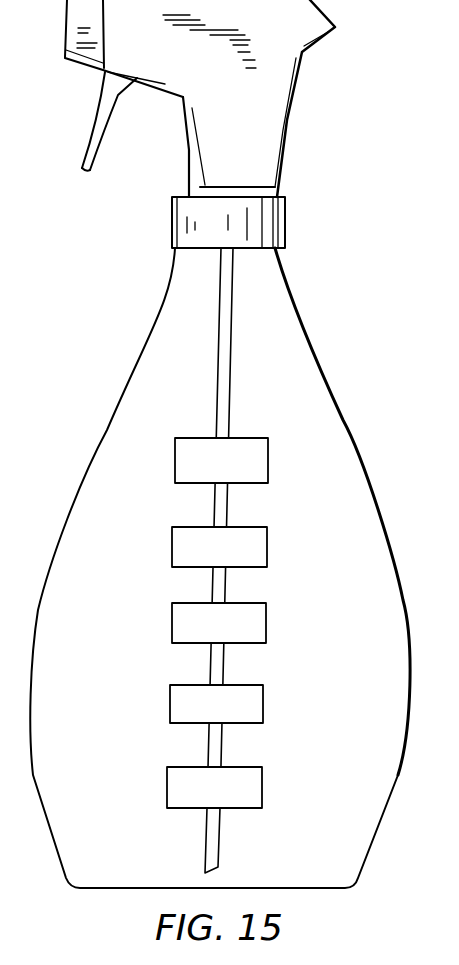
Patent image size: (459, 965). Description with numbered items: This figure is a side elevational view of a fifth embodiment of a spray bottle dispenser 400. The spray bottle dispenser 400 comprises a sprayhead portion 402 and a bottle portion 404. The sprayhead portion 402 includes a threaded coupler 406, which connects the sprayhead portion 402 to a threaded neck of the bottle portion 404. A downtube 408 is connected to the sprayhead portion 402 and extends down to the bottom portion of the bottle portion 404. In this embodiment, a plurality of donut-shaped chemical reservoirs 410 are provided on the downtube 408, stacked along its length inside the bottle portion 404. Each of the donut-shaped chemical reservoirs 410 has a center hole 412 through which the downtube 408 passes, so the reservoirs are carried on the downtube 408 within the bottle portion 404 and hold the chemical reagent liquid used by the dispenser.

The spray bottle dispenser 400 is at (116, 386).
The sprayhead portion 402 is at (252, 141).
The bottle portion 404 is at (322, 422).
The threaded coupler 406 is at (255, 225).
The downtube 408 is at (222, 387).
The donut-shaped chemical reservoirs 410 is at (255, 462).
The center hole 412 is at (88, 962).